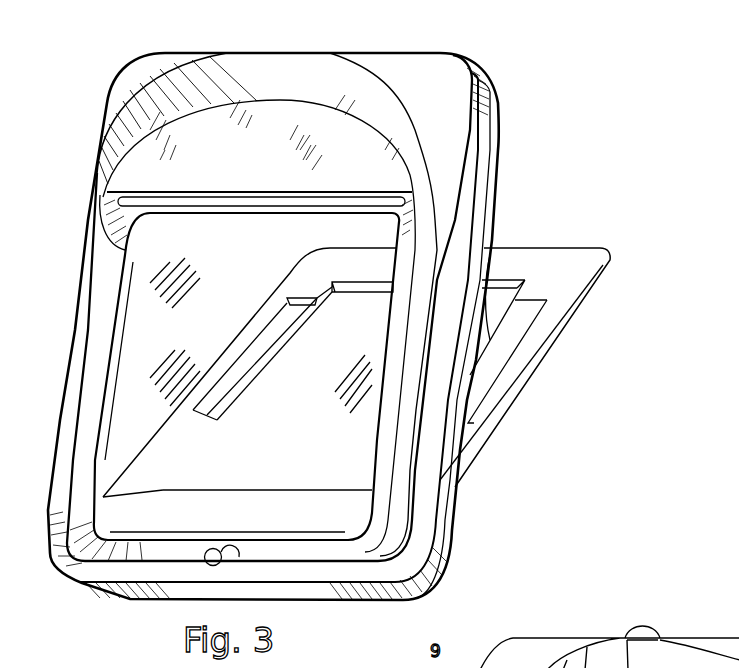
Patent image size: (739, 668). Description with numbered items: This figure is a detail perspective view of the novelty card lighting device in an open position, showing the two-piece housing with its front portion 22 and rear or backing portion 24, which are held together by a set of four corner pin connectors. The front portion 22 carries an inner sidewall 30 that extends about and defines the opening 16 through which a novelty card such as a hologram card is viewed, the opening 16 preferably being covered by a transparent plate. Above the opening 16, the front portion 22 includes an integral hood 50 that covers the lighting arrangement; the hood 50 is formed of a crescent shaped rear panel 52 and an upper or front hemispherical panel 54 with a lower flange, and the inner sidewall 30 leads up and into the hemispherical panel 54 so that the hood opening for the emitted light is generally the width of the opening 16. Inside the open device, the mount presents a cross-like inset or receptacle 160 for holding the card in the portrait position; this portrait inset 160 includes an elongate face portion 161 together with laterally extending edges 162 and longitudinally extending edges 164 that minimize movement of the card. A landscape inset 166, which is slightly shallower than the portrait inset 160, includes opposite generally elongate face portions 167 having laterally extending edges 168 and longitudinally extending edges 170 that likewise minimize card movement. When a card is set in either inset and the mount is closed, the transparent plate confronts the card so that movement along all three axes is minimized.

The opening 16 is at (143, 337).
The front portion 22 is at (422, 484).
The rear or backing portion 24 is at (443, 533).
The inner sidewall 30 is at (97, 257).
The hood 50 is at (212, 90).
The crescent shaped rear panel 52 is at (357, 90).
The hemispherical panel 54 is at (329, 148).
The portrait inset 160 is at (497, 302).
The elongate face portion 161 is at (248, 378).
The laterally extending edges 162 is at (247, 488).
The longitudinally extending edges 164 is at (180, 477).
The landscape inset 166 is at (240, 383).
The elongate face portions 167 is at (253, 360).
The laterally extending edges 168 is at (287, 302).
The longitudinally extending edges 170 is at (203, 403).